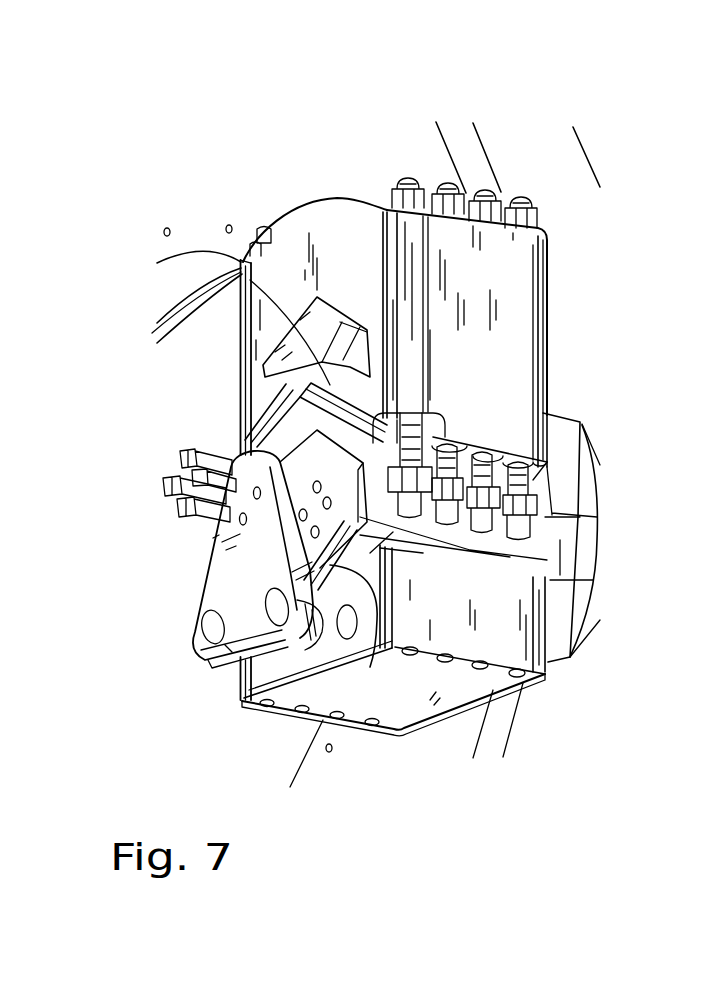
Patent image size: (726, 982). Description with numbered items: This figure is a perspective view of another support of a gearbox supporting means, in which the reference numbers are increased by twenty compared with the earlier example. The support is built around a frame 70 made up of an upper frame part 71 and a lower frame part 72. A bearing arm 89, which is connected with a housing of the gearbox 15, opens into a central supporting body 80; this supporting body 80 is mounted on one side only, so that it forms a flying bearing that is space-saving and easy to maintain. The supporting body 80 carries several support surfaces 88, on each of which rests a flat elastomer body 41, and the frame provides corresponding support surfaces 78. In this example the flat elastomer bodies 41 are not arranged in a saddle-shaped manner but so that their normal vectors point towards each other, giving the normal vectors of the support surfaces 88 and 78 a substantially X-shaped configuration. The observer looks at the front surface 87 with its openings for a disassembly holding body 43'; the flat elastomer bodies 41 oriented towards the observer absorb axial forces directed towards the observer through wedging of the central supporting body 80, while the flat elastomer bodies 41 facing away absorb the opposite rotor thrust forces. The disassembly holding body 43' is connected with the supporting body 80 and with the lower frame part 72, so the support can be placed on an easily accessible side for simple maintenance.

The frame 70 is at (250, 133).
The gearbox 15 is at (552, 147).
The support surface 78 is at (243, 262).
The upper frame part 71 is at (549, 270).
The support surface 88 is at (300, 363).
The flat elastomer body 41 is at (360, 320).
The central supporting body 80 is at (318, 456).
The disassembly holding body 43' is at (215, 558).
The front surface 87 is at (312, 578).
The bearing arm 89 is at (565, 552).
The lower frame part 72 is at (415, 700).